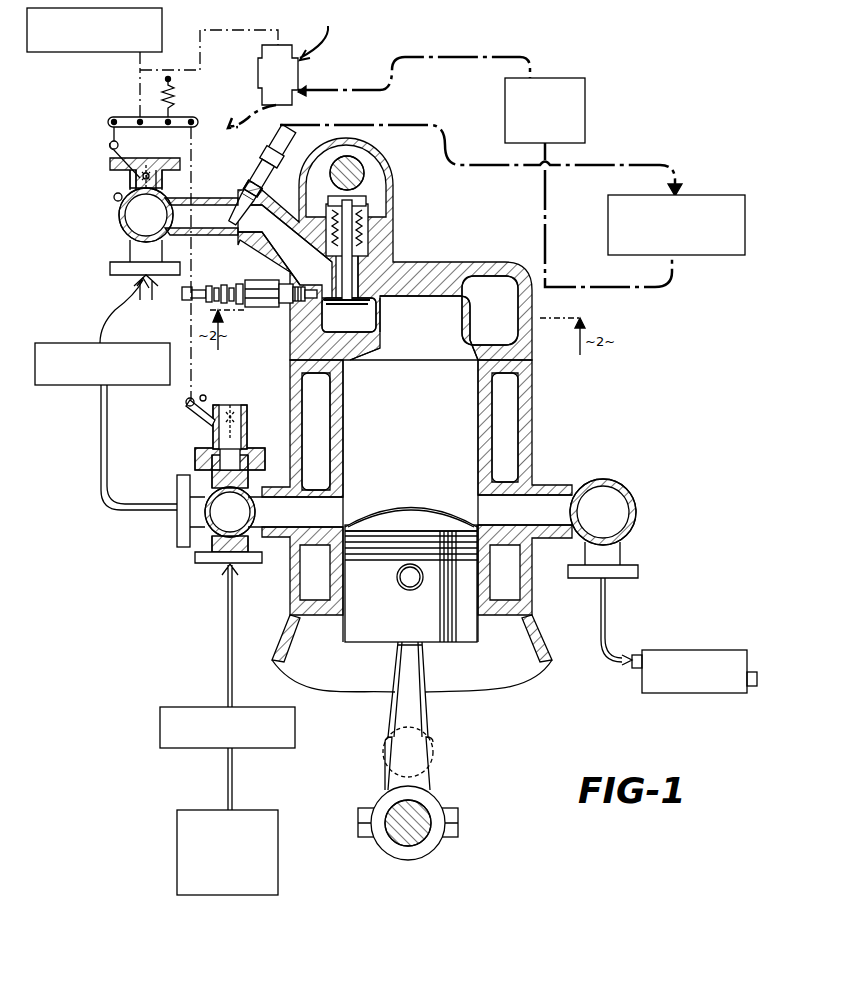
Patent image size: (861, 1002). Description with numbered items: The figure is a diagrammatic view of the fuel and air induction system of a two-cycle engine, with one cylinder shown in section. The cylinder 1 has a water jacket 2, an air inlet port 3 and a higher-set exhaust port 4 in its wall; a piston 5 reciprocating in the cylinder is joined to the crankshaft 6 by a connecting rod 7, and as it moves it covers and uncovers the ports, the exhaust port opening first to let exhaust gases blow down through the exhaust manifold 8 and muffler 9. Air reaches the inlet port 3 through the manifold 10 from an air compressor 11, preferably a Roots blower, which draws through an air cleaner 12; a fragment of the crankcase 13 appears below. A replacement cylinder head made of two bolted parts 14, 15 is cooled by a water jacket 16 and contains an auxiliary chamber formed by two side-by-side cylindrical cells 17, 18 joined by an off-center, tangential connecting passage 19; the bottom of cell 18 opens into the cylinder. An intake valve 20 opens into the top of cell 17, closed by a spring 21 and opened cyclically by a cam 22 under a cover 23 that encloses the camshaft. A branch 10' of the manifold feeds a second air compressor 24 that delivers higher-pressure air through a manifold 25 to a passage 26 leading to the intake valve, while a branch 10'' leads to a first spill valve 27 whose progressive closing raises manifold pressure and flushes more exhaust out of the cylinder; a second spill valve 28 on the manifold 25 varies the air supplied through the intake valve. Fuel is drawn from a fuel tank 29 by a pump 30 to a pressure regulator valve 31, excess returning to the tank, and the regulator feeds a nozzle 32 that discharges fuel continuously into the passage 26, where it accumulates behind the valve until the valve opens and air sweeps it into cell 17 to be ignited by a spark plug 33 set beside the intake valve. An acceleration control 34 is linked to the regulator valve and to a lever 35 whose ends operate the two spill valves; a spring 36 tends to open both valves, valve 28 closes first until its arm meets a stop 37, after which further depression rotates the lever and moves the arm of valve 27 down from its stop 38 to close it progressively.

The cylinder 1 is at (470, 425).
The water jacket 2 is at (525, 442).
The air inlet port 3 is at (345, 510).
The exhaust port 4 is at (478, 497).
The piston 5 is at (420, 505).
The crankshaft 6 is at (393, 812).
The connecting rod 7 is at (395, 673).
The exhaust manifold 8 is at (605, 496).
The muffler 9 is at (692, 656).
The manifold 10 is at (210, 547).
The branch of manifold 10' is at (170, 505).
The branch of manifold 10'' is at (239, 444).
The air compressor 11 is at (188, 710).
The air cleaner 12 is at (188, 818).
The crankcase 13 is at (542, 660).
The cylinder head part 14 is at (290, 352).
The cylinder head part 15 is at (416, 270).
The water jacket 16 is at (525, 272).
The cell 17 is at (324, 318).
The cell 18 is at (427, 298).
The connecting passage 19 is at (389, 329).
The intake valve 20 is at (376, 270).
The spring 21 is at (369, 212).
The cam 22 is at (352, 178).
The cover 23 is at (306, 170).
The air compressor 24 is at (50, 386).
The manifold 25 is at (128, 218).
The passage 26 is at (250, 210).
The first spill valve 27 is at (231, 405).
The second spill valve 28 is at (148, 172).
The fuel tank 29 is at (735, 192).
The fuel pump 30 is at (560, 78).
The pressure regulator valve 31 is at (257, 58).
The nozzle 32 is at (258, 176).
The spark plug 33 is at (244, 286).
The acceleration control 34 is at (160, 24).
The lever 35 is at (122, 117).
The spring 36 is at (174, 94).
The stop 37 is at (114, 198).
The stop 38 is at (206, 396).